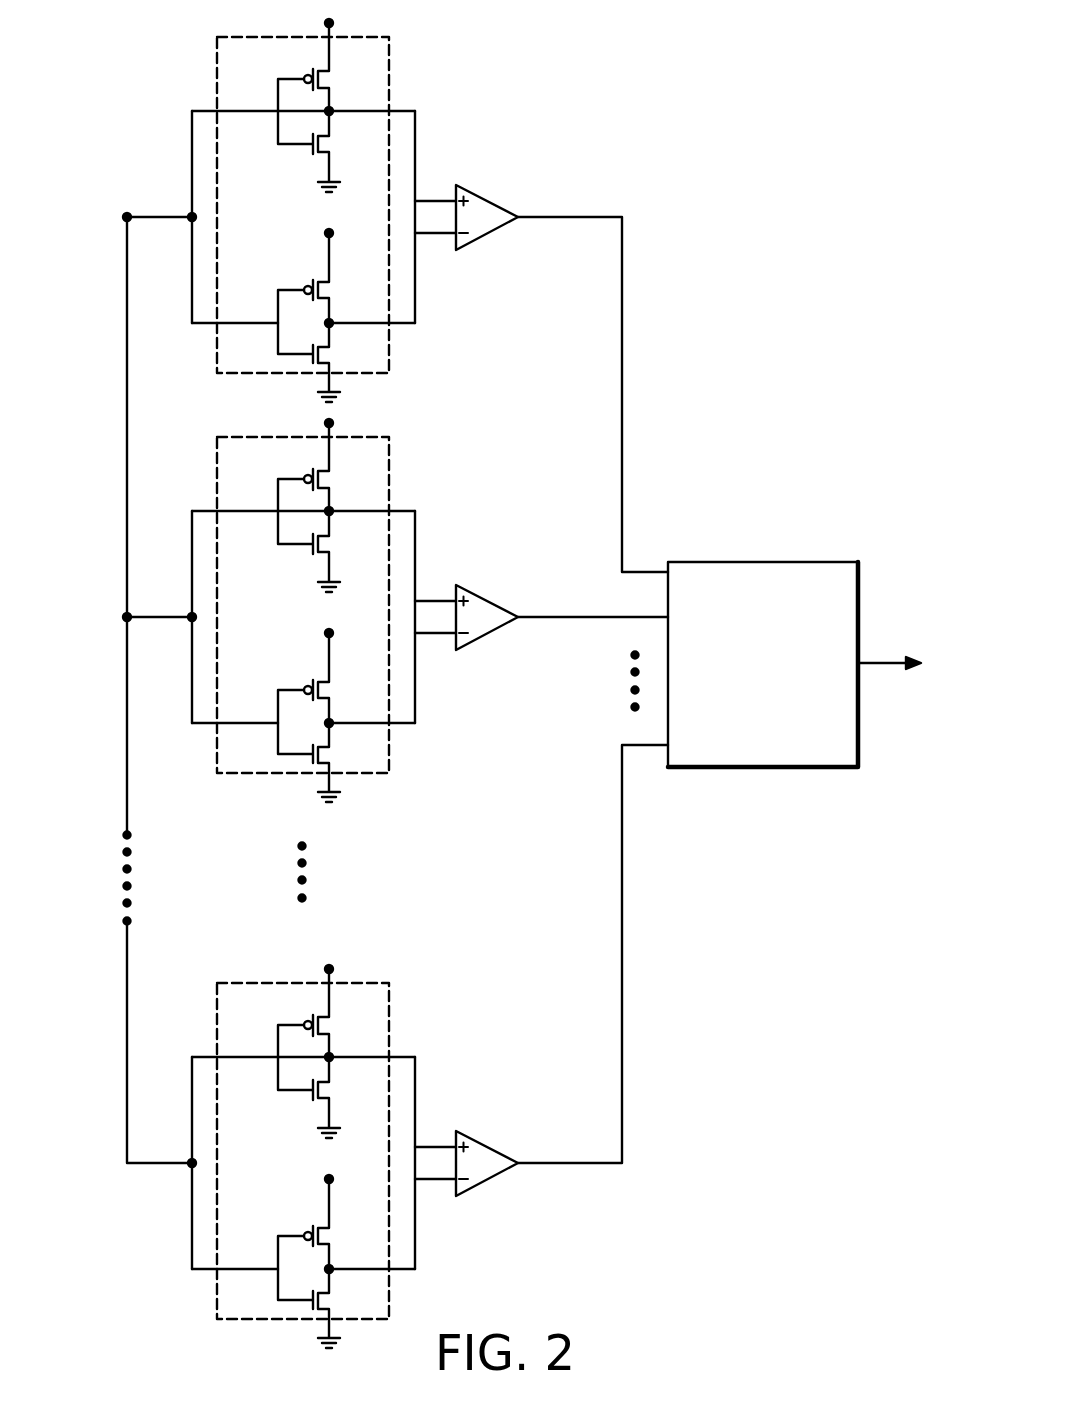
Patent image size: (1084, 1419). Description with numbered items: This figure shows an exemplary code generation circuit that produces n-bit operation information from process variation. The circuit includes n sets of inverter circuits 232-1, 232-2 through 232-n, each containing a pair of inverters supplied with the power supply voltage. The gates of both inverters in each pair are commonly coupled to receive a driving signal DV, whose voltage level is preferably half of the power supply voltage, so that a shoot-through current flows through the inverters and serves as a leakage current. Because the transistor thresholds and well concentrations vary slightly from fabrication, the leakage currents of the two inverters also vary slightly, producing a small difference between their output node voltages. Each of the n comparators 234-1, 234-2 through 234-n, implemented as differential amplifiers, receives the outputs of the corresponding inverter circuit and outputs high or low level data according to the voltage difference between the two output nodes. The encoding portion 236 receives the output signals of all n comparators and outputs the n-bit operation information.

The inverter circuit 232-1 is at (389, 63).
The inverter circuit 232-2 is at (325, 597).
The inverter circuit 232-n is at (325, 1143).
The comparator 234-1 is at (477, 195).
The comparator 234-2 is at (510, 597).
The comparator 234-n is at (510, 1143).
The encoding portion 236 is at (783, 562).
The driving signal DV is at (127, 217).